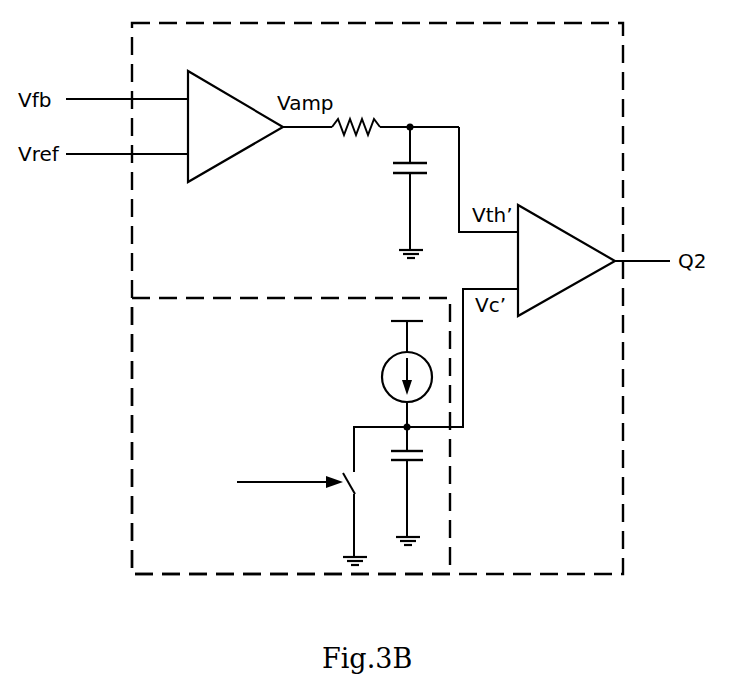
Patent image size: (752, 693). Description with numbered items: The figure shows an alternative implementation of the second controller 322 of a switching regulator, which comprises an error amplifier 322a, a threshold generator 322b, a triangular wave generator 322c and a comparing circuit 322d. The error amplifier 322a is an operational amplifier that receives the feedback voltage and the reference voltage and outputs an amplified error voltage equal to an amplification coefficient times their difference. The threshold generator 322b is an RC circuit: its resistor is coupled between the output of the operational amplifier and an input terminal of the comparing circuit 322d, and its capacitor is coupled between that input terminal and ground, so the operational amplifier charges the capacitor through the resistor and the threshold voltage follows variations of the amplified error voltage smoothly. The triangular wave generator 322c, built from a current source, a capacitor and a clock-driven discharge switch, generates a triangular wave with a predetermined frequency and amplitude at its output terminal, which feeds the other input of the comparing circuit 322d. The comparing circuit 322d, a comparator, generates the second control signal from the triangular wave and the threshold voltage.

The second controller 322 is at (624, 377).
The error amplifier 322a is at (203, 181).
The threshold generator 322b is at (374, 107).
The triangular wave generator 322c is at (450, 493).
The comparing circuit 322d is at (523, 208).